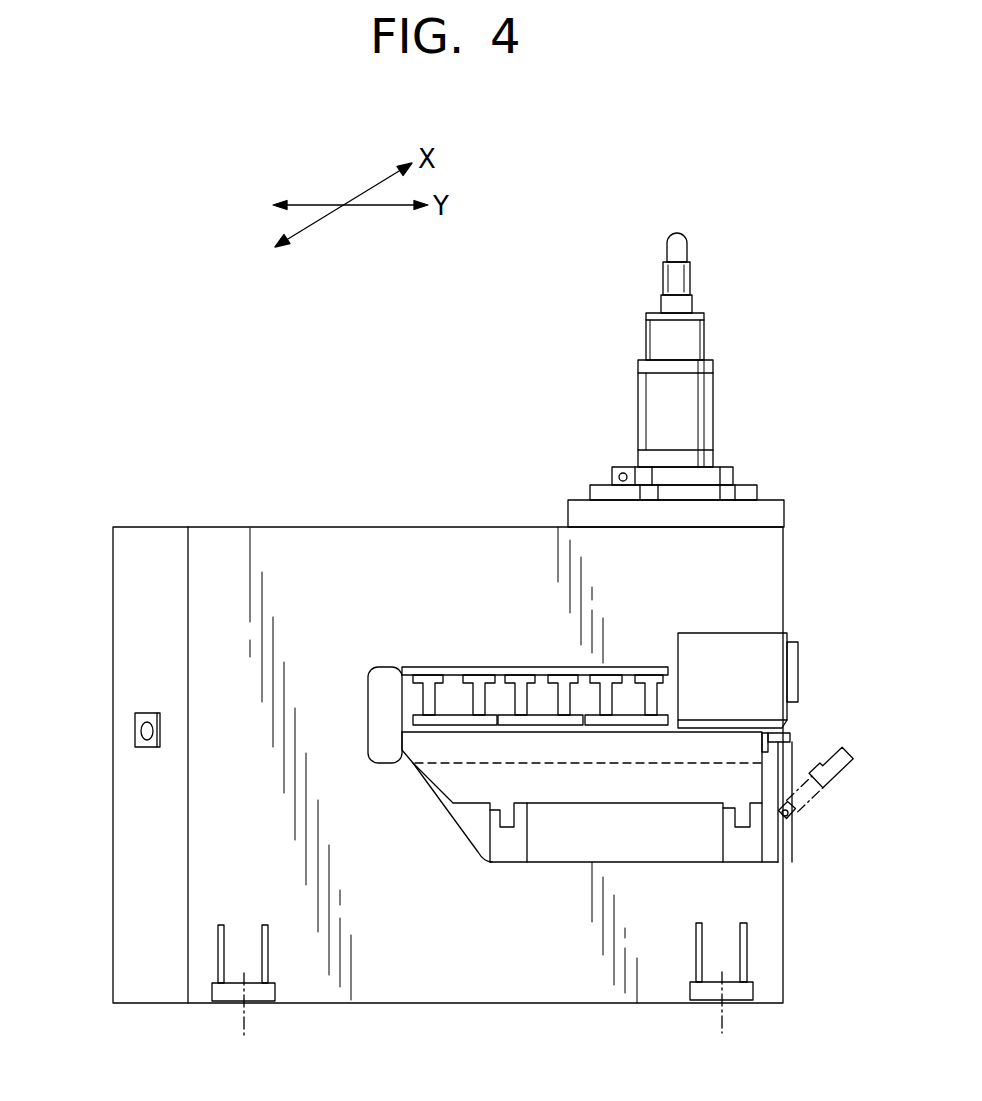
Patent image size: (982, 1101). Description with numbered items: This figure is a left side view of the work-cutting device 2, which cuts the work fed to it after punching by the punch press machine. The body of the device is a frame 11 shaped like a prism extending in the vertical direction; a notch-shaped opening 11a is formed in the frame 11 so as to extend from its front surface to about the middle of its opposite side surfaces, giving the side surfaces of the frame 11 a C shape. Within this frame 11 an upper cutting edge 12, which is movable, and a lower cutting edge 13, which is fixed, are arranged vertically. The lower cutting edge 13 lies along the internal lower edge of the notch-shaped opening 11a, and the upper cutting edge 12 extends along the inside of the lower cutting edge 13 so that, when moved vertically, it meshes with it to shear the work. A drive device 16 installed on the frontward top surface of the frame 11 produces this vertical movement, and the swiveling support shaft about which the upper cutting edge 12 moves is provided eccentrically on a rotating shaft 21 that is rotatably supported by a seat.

The work-cutting device 2 is at (258, 423).
The frame 11 is at (440, 527).
The notch-shaped opening 11a is at (393, 668).
The upper cutting edge 12 is at (538, 722).
The lower cutting edge 13 is at (770, 741).
The drive device 16 is at (690, 408).
The rotating shaft 21 is at (143, 731).